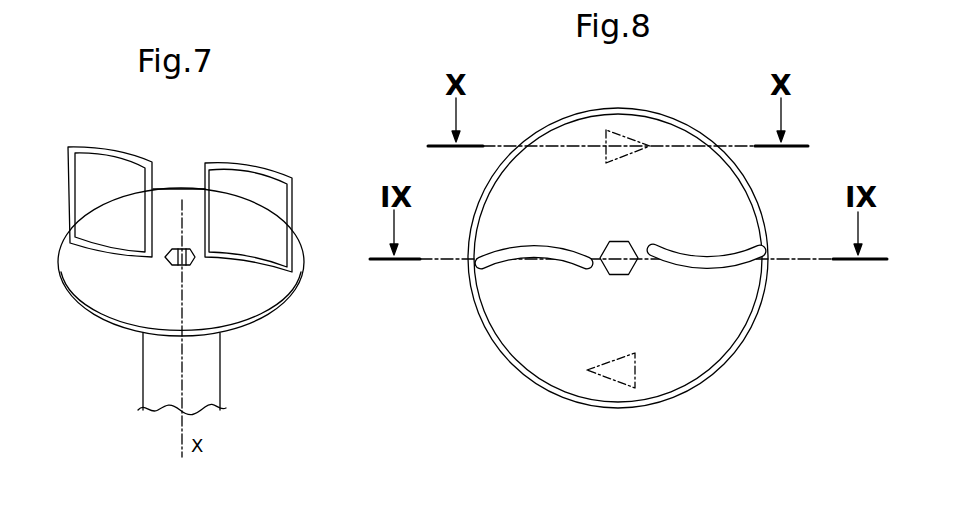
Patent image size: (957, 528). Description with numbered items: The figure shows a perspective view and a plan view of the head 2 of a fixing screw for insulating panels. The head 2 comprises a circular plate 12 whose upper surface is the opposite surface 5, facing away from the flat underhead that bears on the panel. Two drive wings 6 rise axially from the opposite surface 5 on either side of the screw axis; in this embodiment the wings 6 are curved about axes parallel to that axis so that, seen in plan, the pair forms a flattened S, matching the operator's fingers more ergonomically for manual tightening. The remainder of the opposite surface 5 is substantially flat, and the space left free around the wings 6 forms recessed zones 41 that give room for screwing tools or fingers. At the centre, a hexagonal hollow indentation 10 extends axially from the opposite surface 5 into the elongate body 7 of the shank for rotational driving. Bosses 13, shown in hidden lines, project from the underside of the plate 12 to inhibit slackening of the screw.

In FIG. 7, the head 2 is at (234, 123).
In FIG. 8, the head 2 is at (763, 352).
In FIG. 7, the opposite surface 5 is at (153, 304).
In FIG. 8, the opposite surface 5 is at (683, 332).
In FIG. 7, the drive wing 6 is at (103, 145).
In FIG. 8, the drive wing 6 is at (678, 247).
In FIG. 7, the body 7 is at (153, 375).
In FIG. 7, the hollow indentation 10 is at (190, 266).
In FIG. 8, the hollow indentation 10 is at (610, 248).
In FIG. 7, the circular plate 12 is at (86, 302).
In FIG. 8, the circular plate 12 is at (663, 130).
In FIG. 8, the bosses 13 is at (612, 128).
In FIG. 7, the recessed zones 41 is at (193, 176).
In FIG. 8, the recessed zones 41 is at (519, 284).